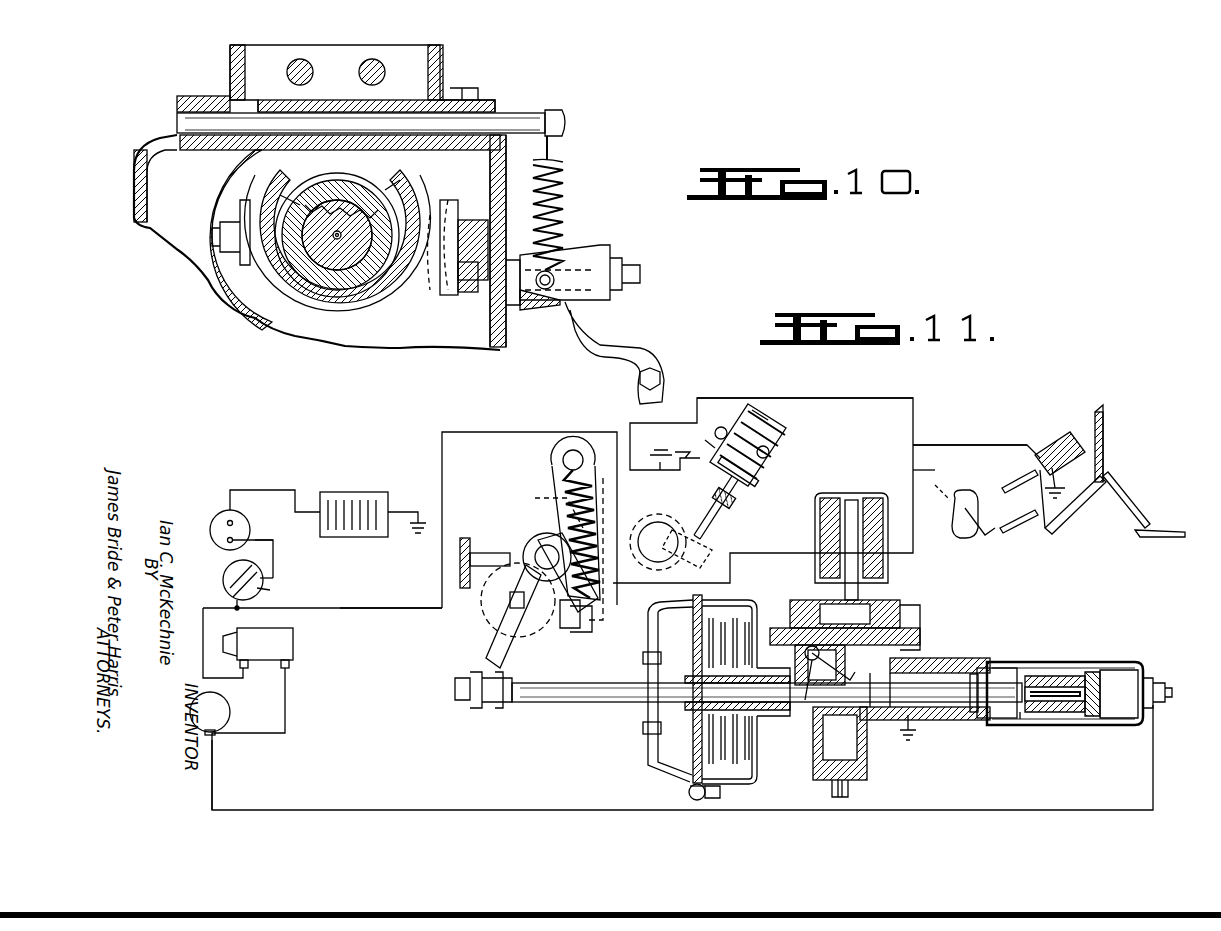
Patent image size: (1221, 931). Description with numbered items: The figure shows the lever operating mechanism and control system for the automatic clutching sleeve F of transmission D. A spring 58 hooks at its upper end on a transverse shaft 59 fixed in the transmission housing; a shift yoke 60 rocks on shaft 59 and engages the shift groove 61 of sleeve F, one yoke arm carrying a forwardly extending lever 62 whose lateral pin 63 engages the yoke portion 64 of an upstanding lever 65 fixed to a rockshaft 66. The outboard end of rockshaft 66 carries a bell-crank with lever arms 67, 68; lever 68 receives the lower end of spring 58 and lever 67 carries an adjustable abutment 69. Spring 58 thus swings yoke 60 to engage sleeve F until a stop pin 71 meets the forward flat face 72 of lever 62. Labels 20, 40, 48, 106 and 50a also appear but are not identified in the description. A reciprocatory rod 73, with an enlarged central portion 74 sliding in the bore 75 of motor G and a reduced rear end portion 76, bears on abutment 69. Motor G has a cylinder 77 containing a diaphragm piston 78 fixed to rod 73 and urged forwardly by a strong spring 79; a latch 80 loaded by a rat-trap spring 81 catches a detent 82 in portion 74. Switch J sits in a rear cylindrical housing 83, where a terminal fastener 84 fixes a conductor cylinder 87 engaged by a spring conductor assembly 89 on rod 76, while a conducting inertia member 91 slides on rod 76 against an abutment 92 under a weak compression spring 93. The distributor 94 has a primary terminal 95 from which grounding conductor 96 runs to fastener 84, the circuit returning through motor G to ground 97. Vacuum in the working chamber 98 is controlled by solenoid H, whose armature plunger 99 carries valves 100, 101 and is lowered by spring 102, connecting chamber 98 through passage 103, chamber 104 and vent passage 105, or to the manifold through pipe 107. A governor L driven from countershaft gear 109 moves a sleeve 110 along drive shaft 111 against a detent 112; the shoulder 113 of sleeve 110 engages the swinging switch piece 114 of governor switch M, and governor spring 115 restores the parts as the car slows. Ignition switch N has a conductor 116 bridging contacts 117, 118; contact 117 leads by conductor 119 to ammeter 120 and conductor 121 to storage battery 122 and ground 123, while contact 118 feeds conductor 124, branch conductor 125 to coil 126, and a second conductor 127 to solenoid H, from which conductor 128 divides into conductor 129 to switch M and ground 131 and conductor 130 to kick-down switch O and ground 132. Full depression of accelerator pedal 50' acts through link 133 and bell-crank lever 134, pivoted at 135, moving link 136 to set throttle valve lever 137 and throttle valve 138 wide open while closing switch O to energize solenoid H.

In FIG. 10, the drum 20 is at (318, 292).
In FIG. 10, the shaft 40 is at (330, 290).
In FIG. 10, the ratchet teeth 48 is at (395, 178).
In FIG. 10, the spring 58 is at (565, 192).
In FIG. 11, the spring 58 is at (565, 488).
In FIG. 10, the transverse shaft 59 is at (450, 96).
In FIG. 11, the transverse shaft 59 is at (573, 448).
In FIG. 10, the shift yoke 60 is at (240, 172).
In FIG. 11, the shift yoke 60 is at (552, 470).
In FIG. 10, the shift groove 61 is at (262, 292).
In FIG. 10, the forwardly extending lever 62 is at (450, 300).
In FIG. 11, the forwardly extending lever 62 is at (566, 545).
In FIG. 10, the lateral pin 63 is at (474, 215).
In FIG. 11, the lateral pin 63 is at (542, 548).
In FIG. 11, the yoke portion 64 is at (510, 560).
In FIG. 10, the upstanding lever 65 is at (468, 300).
In FIG. 11, the upstanding lever 65 is at (480, 600).
In FIG. 10, the rockshaft 66 is at (515, 300).
In FIG. 11, the rockshaft 66 is at (565, 628).
In FIG. 10, the lever arm 67 is at (650, 352).
In FIG. 11, the lever arm 67 is at (485, 648).
In FIG. 10, the lever arm 68 is at (570, 258).
In FIG. 11, the lever arm 68 is at (582, 632).
In FIG. 11, the adjustable abutment 69 is at (486, 708).
In FIG. 10, the stop pin 71 is at (428, 280).
In FIG. 11, the stop pin 71 is at (492, 590).
In FIG. 11, the forward flat face 72 is at (518, 600).
In FIG. 11, the reciprocatory rod 73 is at (560, 702).
In FIG. 11, the enlarged central portion 74 is at (880, 710).
In FIG. 11, the bore 75 is at (965, 660).
In FIG. 11, the reduced rear end portion 76 is at (995, 718).
In FIG. 11, the cylinder 77 is at (688, 765).
In FIG. 11, the piston 78 is at (690, 790).
In FIG. 11, the spring 79 is at (718, 795).
In FIG. 11, the latch 80 is at (850, 683).
In FIG. 11, the rat-trap spring 81 is at (806, 702).
In FIG. 11, the detent 82 is at (768, 720).
In FIG. 11, the rear cylindrical housing 83 is at (1145, 668).
In FIG. 11, the terminal fastener 84 is at (1163, 683).
In FIG. 11, the conductor cylinder 87 is at (1112, 718).
In FIG. 11, the spring conductor assembly 89 is at (1078, 672).
In FIG. 11, the conducting inertia member 91 is at (1035, 714).
In FIG. 11, the abutment 92 is at (1012, 670).
In FIG. 11, the compression spring 93 is at (1050, 672).
In FIG. 11, the distributor 94 is at (212, 700).
In FIG. 11, the primary terminal 95 is at (220, 726).
In FIG. 11, the grounding conductor 96 is at (215, 772).
In FIG. 11, the ground 97 is at (917, 732).
In FIG. 11, the working chamber 98 is at (765, 772).
In FIG. 11, the armature plunger 99 is at (860, 500).
In FIG. 11, the valve 100 is at (900, 568).
In FIG. 11, the valve 101 is at (905, 603).
In FIG. 11, the spring 102 is at (840, 655).
In FIG. 11, the passage 103 is at (808, 600).
In FIG. 11, the chamber 104 is at (905, 590).
In FIG. 11, the vent passage 105 is at (790, 600).
In FIG. 11, the bracket 106 is at (912, 640).
In FIG. 11, the pipe 107 is at (850, 790).
In FIG. 11, the countershaft gear 109 is at (655, 518).
In FIG. 11, the sleeve 110 is at (750, 466).
In FIG. 11, the drive shaft 111 is at (705, 518).
In FIG. 11, the detent 112 is at (728, 500).
In FIG. 11, the shoulder 113 is at (748, 480).
In FIG. 11, the swinging switch piece 114 is at (722, 425).
In FIG. 11, the governor spring 115 is at (760, 425).
In FIG. 11, the conductor 116 is at (262, 592).
In FIG. 11, the contact 117 is at (264, 580).
In FIG. 11, the contact 118 is at (228, 580).
In FIG. 11, the conductor 119 is at (262, 540).
In FIG. 11, the ammeter 120 is at (235, 524).
In FIG. 11, the conductor 121 is at (256, 490).
In FIG. 11, the storage battery 122 is at (337, 500).
In FIG. 11, the ground 123 is at (418, 535).
In FIG. 11, the conductor 124 is at (233, 596).
In FIG. 11, the conductor 125 is at (205, 624).
In FIG. 11, the coil 126 is at (280, 642).
In FIG. 11, the second conductor 127 is at (355, 613).
In FIG. 11, the conductor 128 is at (920, 470).
In FIG. 11, the conductor 129 is at (872, 398).
In FIG. 11, the conductor 130 is at (952, 445).
In FIG. 11, the ground 131 is at (656, 448).
In FIG. 11, the ground 132 is at (1100, 470).
In FIG. 11, the link 133 is at (1076, 510).
In FIG. 11, the bell-crank lever 134 is at (1015, 495).
In FIG. 11, the pivot 135 is at (1020, 535).
In FIG. 11, the link 136 is at (1043, 535).
In FIG. 11, the throttle valve lever 137 is at (966, 540).
In FIG. 11, the throttle valve 138 is at (951, 488).
In FIG. 11, the pedal arm 50a is at (1120, 480).
In FIG. 11, the accelerator pedal 50' is at (1160, 507).
In FIG. 10, the transmission D is at (132, 155).
In FIG. 10, the sleeve F is at (265, 272).
In FIG. 11, the sleeve F is at (604, 610).
In FIG. 11, the motor G is at (645, 750).
In FIG. 11, the solenoid H is at (818, 525).
In FIG. 11, the switch J is at (1098, 665).
In FIG. 11, the governor L is at (775, 432).
In FIG. 11, the governor switch M is at (675, 528).
In FIG. 11, the ignition switch N is at (258, 566).
In FIG. 11, the kick-down switch O is at (1050, 460).